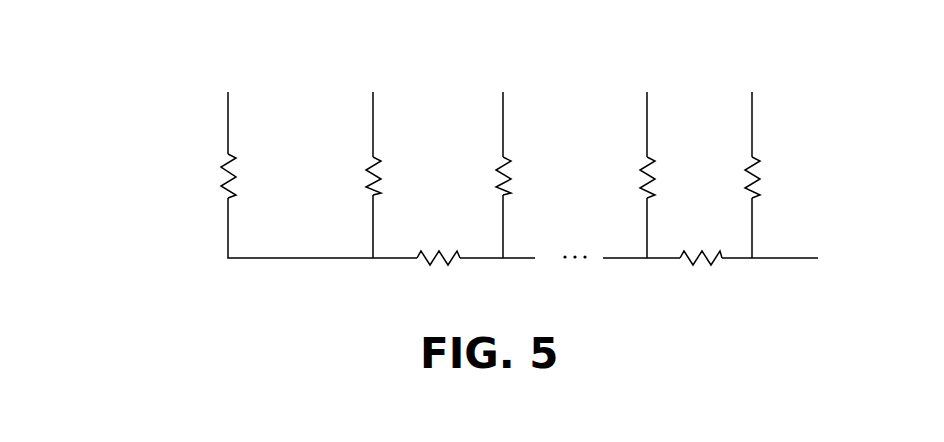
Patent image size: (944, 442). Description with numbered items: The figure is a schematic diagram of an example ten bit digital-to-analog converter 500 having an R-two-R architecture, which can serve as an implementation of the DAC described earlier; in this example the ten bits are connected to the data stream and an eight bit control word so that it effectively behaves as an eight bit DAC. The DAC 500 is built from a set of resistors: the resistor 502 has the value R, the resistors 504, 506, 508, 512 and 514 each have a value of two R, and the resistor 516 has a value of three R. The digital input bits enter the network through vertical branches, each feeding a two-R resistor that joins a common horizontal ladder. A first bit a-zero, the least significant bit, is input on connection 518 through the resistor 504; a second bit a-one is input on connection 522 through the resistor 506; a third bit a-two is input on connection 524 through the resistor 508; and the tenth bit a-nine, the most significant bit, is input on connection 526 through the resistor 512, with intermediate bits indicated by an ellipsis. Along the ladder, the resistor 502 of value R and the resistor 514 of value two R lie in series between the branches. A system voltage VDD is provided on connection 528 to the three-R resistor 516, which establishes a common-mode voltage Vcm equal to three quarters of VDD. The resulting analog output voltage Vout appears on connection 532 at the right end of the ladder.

The digital-to-analog converter 500 is at (173, 36).
The resistor 502 is at (449, 253).
The resistor 504 is at (230, 173).
The resistor 506 is at (378, 174).
The resistor 508 is at (508, 174).
The resistor 512 is at (652, 174).
The resistor 514 is at (710, 254).
The resistor 516 is at (745, 185).
The connection 518 is at (254, 105).
The connection 522 is at (373, 126).
The connection 524 is at (527, 110).
The connection 526 is at (672, 111).
The connection 528 is at (752, 130).
The connection 532 is at (775, 257).